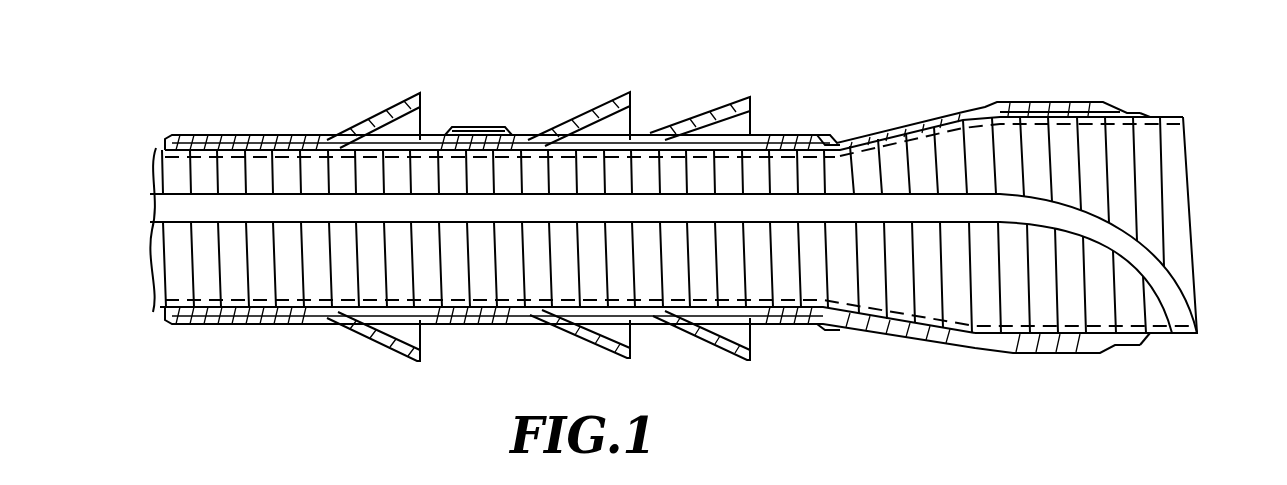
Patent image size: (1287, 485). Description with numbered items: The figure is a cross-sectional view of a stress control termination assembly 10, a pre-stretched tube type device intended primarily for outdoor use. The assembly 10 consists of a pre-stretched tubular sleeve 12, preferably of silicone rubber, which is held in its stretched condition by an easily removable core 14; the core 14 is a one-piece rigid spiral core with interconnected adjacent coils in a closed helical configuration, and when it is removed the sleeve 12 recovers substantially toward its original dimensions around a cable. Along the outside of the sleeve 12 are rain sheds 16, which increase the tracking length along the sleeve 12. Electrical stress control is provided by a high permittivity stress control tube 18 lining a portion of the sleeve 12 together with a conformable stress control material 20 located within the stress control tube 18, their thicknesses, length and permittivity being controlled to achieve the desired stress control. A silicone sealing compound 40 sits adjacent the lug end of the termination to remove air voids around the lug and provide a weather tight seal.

The termination assembly 10 is at (603, 99).
The pre-stretched tubular sleeve 12 is at (945, 116).
The removable core 14 is at (1167, 116).
The rain sheds 16 is at (563, 124).
The stress control tube 18 is at (804, 136).
The conformable stress control material 20 is at (758, 129).
The silicone sealing compound 40 is at (239, 146).